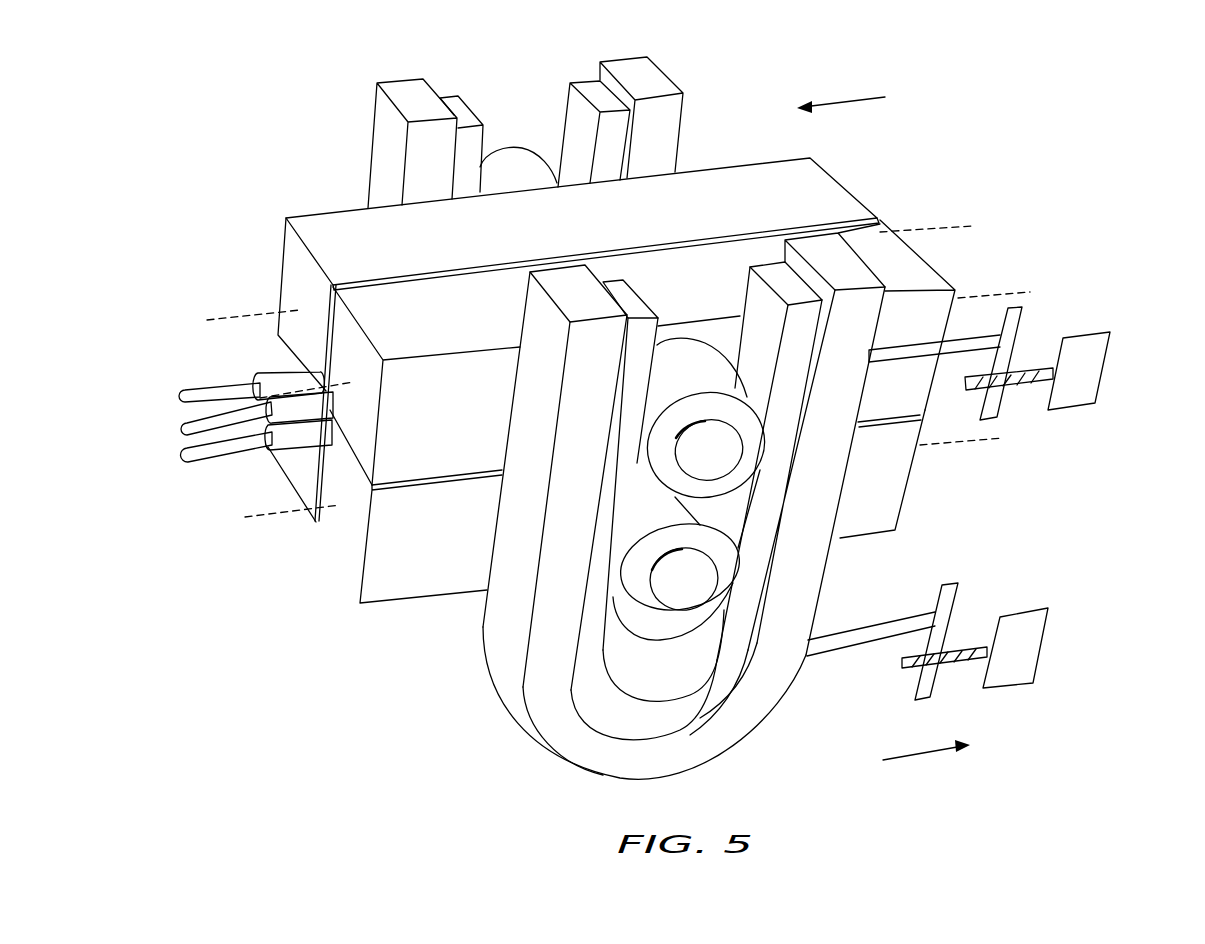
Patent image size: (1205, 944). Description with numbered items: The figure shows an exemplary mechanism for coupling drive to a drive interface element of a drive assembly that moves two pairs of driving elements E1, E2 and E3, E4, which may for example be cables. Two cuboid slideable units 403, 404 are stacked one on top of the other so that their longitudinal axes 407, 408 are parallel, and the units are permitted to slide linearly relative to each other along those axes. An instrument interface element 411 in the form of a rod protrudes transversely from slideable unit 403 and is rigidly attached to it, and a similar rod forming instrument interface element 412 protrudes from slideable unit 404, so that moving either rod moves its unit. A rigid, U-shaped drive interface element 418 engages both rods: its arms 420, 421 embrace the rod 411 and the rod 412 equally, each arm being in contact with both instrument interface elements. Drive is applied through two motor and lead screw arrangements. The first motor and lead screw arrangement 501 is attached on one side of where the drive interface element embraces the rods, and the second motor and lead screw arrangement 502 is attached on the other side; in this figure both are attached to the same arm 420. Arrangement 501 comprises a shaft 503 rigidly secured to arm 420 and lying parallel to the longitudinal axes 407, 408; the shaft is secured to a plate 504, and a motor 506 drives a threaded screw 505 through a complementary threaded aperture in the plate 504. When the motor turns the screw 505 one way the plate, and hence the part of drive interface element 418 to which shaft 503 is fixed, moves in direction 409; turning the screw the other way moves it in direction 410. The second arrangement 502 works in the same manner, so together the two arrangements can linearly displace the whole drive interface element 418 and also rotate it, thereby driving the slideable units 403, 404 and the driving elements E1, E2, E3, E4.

The third slideable unit 403 is at (933, 277).
The fourth slideable unit 404 is at (895, 497).
The longitudinal axis 407 is at (343, 380).
The longitudinal axis 408 is at (260, 518).
The direction 409 is at (930, 753).
The direction 410 is at (838, 98).
The instrument interface element 411 is at (717, 447).
The instrument interface element 412 is at (690, 595).
The drive interface element 418 is at (570, 760).
The arm 420 is at (815, 573).
The arm 421 is at (537, 660).
The first motor and lead screw arrangement 501 is at (1031, 358).
The second motor and lead screw arrangement 502 is at (996, 584).
The shaft 503 is at (970, 338).
The plate 504 is at (1018, 322).
The threaded screw 505 is at (1020, 383).
The motor 506 is at (1097, 370).
The driving element E1 is at (235, 392).
The driving element E2 is at (200, 417).
The driving element E3 is at (210, 440).
The driving element E4 is at (246, 444).